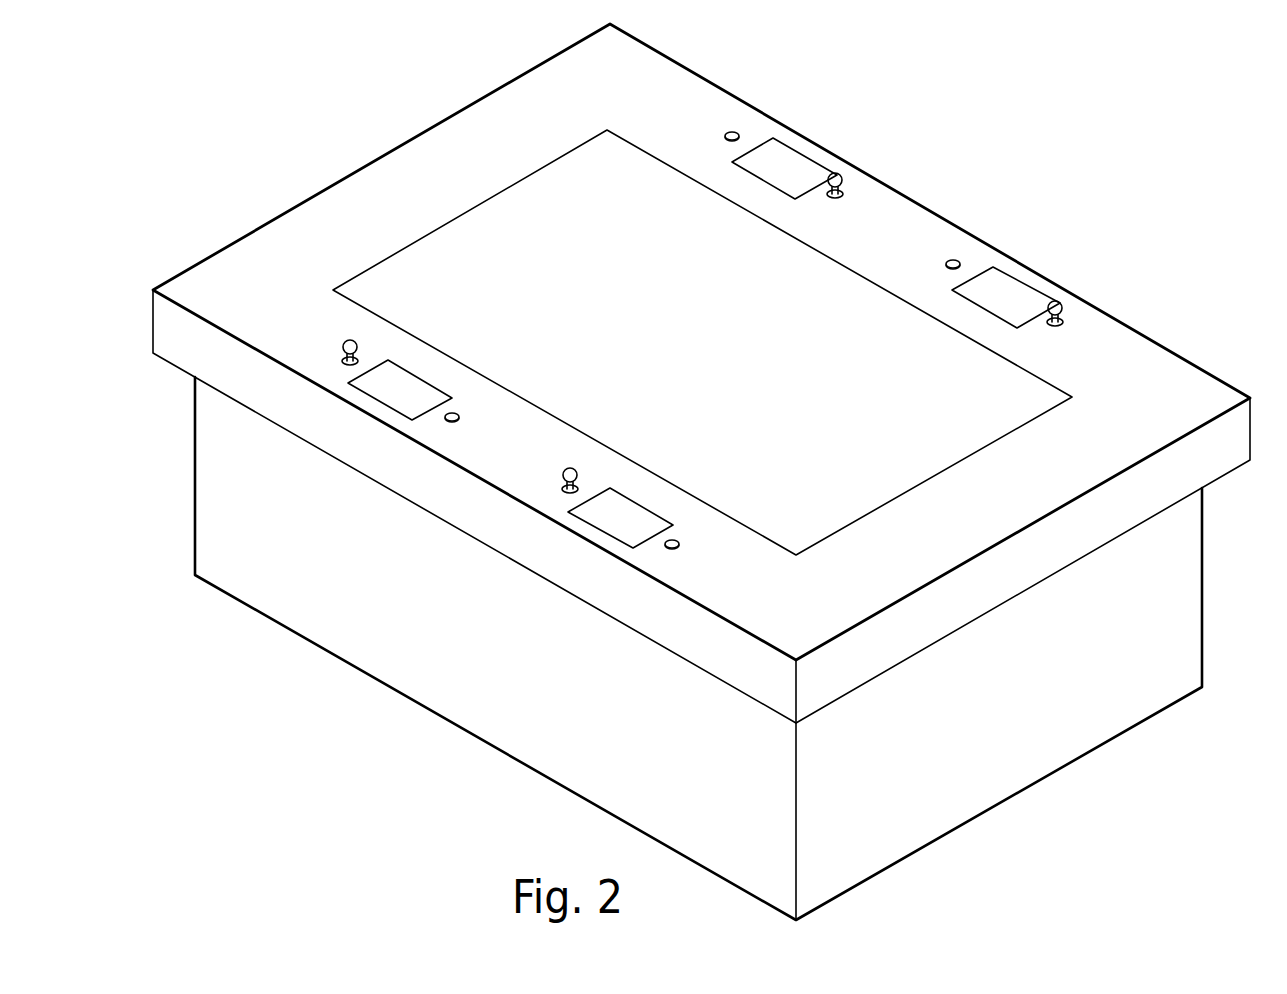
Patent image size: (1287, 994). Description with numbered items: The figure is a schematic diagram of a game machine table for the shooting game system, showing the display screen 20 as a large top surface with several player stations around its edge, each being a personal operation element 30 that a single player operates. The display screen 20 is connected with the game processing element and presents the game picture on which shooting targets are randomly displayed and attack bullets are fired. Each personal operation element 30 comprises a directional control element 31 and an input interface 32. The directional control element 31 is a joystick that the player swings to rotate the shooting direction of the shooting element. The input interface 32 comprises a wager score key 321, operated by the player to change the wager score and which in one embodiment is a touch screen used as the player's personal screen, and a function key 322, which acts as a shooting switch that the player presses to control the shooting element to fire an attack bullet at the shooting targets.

The display screen 20 is at (535, 172).
The personal operation element 30 is at (1082, 325).
The directional control element 31 is at (1062, 310).
The input interface 32 is at (1057, 136).
The wager score key 321 is at (1002, 287).
The function key 322 is at (950, 258).